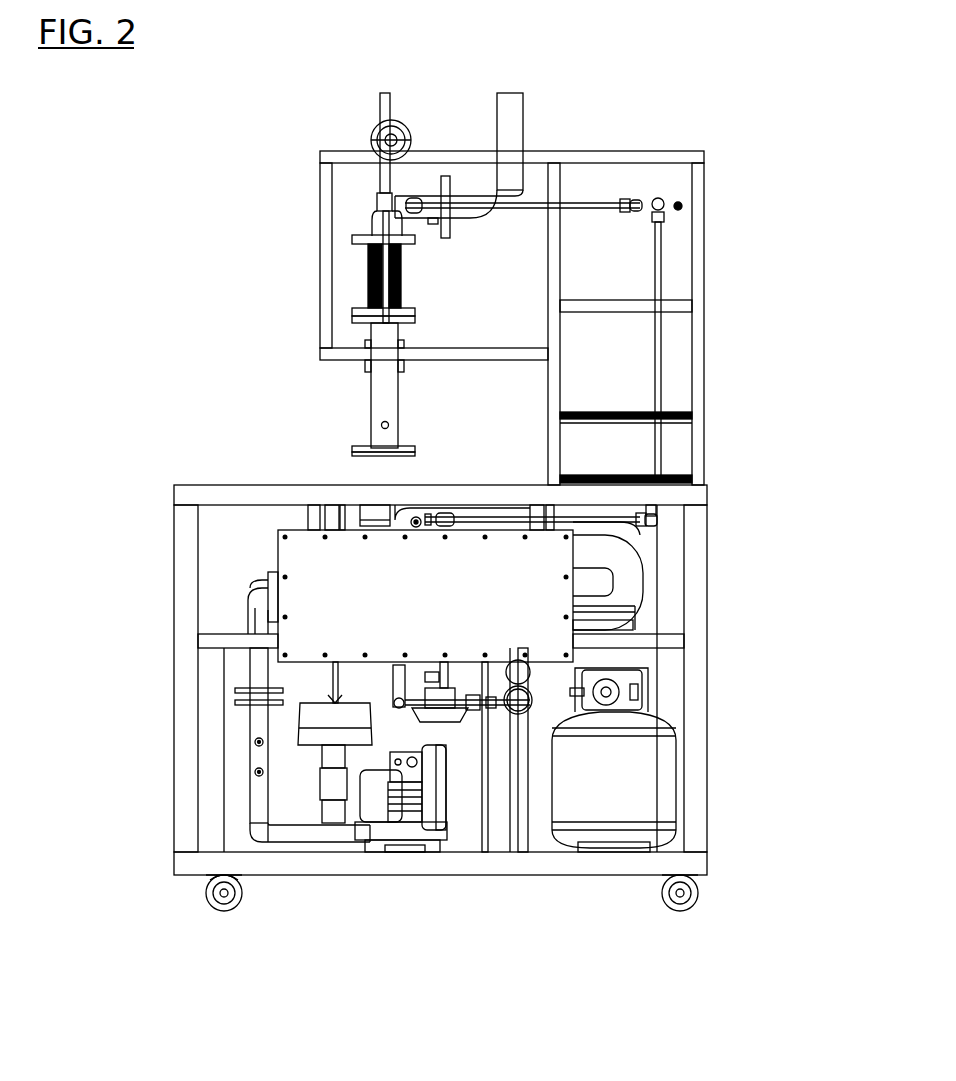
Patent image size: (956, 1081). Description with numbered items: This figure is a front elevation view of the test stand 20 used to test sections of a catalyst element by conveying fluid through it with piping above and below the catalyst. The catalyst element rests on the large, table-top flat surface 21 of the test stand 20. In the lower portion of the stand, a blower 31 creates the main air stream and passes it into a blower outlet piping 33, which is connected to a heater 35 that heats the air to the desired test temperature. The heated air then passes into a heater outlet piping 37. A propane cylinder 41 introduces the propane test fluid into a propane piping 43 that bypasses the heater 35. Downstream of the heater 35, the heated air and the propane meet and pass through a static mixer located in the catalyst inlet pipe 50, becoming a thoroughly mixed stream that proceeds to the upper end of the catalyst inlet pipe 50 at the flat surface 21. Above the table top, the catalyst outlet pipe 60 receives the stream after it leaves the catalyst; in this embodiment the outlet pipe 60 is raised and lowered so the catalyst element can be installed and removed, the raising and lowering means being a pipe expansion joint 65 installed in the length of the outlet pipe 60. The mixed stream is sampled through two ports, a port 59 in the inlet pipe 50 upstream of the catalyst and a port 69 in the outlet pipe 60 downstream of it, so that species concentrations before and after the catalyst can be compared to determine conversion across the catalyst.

The test stand 20 is at (695, 378).
The flat surface 21 is at (192, 485).
The blower 31 is at (388, 820).
The blower outlet piping 33 is at (248, 722).
The heater 35 is at (570, 628).
The heater outlet piping 37 is at (643, 560).
The propane cylinder 41 is at (668, 800).
The propane piping 43 is at (488, 515).
The catalyst inlet pipe 50 is at (370, 512).
The port 59 is at (423, 512).
The catalyst outlet pipe 60 is at (398, 386).
The pipe expansion joint 65 is at (355, 446).
The port 69 is at (385, 424).